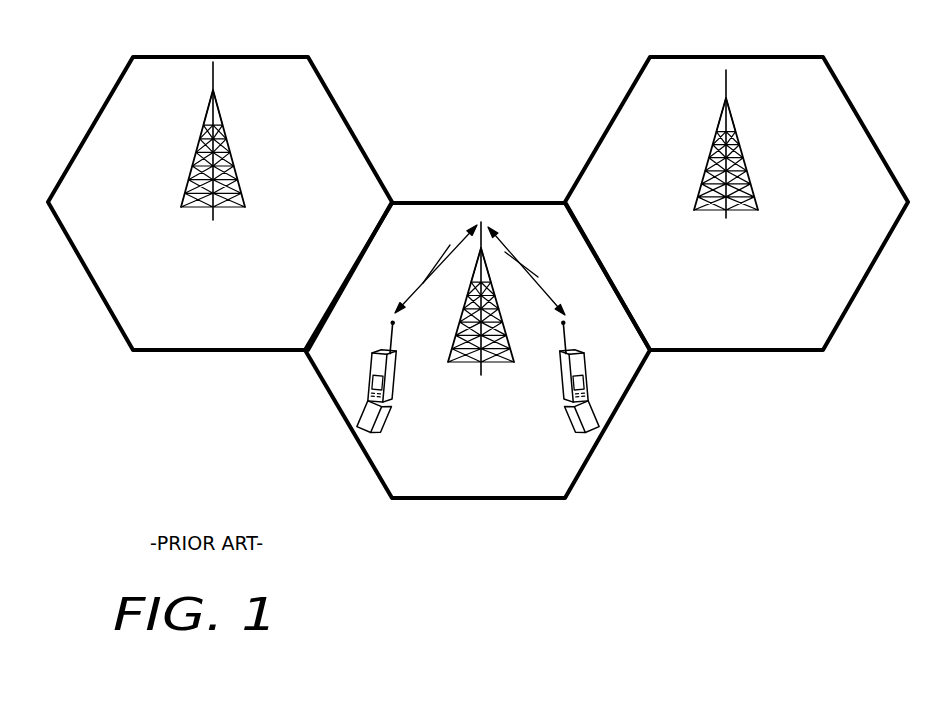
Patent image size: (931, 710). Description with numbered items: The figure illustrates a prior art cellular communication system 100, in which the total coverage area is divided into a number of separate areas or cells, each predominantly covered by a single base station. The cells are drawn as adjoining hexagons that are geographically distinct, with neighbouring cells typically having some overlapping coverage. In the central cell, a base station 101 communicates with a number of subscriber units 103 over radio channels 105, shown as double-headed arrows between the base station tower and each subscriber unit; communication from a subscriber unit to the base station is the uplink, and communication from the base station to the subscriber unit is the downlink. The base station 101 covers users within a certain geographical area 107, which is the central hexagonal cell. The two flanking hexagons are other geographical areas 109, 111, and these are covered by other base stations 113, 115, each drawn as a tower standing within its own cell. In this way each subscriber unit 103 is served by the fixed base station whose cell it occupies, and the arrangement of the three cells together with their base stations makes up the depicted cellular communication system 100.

The cellular communication system 100 is at (478, 261).
The base station 101 is at (481, 375).
The subscriber units 103 is at (377, 368).
The radio channels 105 is at (436, 265).
The geographical area 107 is at (467, 203).
The geographical area 109 is at (168, 56).
The geographical area 111 is at (778, 56).
The base station 113 is at (238, 160).
The base station 115 is at (743, 146).